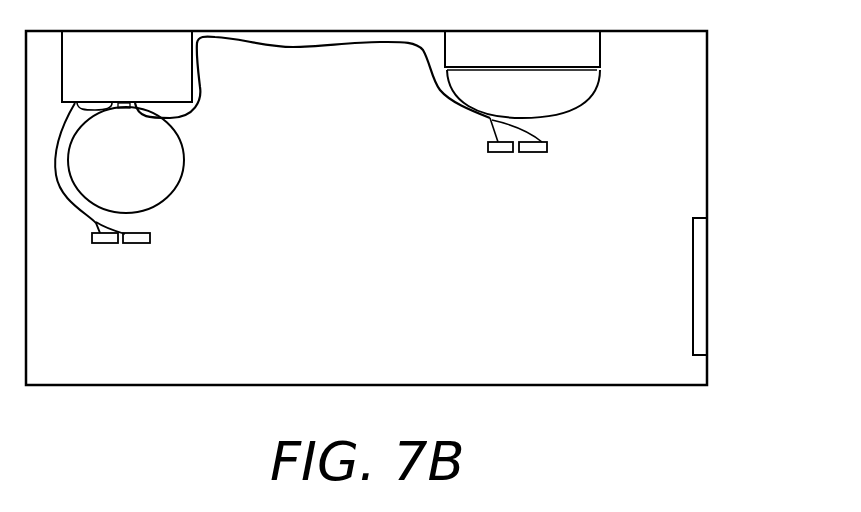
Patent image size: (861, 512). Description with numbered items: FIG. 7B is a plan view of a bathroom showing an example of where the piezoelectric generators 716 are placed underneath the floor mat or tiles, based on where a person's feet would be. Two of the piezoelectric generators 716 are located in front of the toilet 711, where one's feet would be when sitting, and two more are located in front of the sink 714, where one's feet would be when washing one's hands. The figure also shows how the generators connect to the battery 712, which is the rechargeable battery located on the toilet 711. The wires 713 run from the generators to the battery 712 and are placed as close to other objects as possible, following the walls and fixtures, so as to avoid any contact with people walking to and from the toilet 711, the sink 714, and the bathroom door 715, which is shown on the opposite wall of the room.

The toilet 711 is at (180, 67).
The battery 712 is at (130, 108).
The wires 713 is at (370, 45).
The sink 714 is at (580, 105).
The bathroom door 715 is at (707, 287).
The piezoelectric generators 716 is at (108, 245).